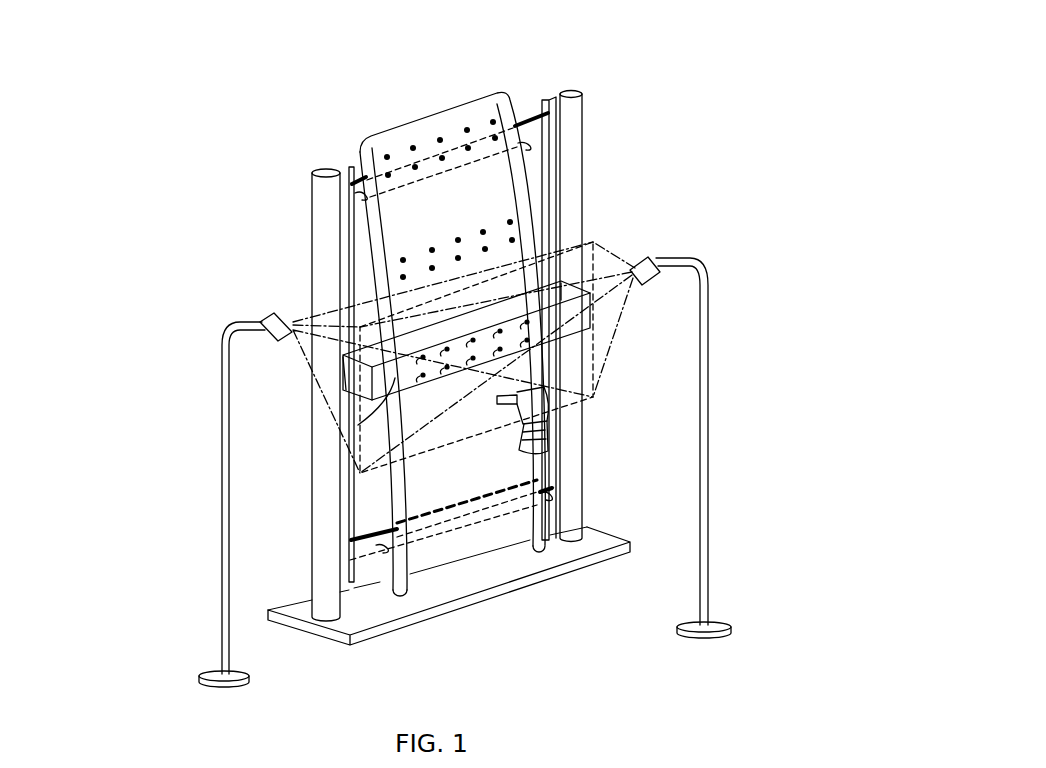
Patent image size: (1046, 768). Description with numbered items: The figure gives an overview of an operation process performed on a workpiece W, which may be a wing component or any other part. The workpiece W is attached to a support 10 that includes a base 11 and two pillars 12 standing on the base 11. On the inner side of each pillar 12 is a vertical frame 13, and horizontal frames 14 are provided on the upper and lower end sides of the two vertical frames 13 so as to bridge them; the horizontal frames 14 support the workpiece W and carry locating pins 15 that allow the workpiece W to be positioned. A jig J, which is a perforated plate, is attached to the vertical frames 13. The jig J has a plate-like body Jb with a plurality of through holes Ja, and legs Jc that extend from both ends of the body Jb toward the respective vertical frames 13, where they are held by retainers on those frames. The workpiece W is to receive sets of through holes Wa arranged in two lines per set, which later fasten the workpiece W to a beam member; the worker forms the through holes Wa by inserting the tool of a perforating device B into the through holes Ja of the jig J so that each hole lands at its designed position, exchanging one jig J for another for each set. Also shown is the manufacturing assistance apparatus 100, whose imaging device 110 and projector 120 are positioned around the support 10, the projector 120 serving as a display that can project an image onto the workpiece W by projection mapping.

The support 10 is at (312, 233).
The base 11 is at (611, 560).
The pillar 12 is at (323, 172).
The vertical frame 13 is at (353, 595).
The horizontal frame 14 is at (520, 120).
The locating pin 15 is at (357, 176).
The manufacturing assistance apparatus 100 is at (679, 212).
The imaging device 110 is at (648, 280).
The projector 120 is at (262, 318).
The workpiece W is at (423, 112).
The through hole Wa is at (493, 122).
The jig J is at (410, 418).
The through hole Ja is at (527, 345).
The body Jb is at (400, 398).
The leg Jc is at (357, 383).
The perforating device B is at (550, 413).